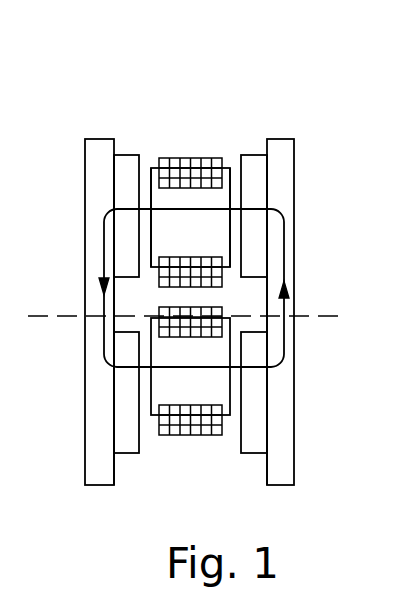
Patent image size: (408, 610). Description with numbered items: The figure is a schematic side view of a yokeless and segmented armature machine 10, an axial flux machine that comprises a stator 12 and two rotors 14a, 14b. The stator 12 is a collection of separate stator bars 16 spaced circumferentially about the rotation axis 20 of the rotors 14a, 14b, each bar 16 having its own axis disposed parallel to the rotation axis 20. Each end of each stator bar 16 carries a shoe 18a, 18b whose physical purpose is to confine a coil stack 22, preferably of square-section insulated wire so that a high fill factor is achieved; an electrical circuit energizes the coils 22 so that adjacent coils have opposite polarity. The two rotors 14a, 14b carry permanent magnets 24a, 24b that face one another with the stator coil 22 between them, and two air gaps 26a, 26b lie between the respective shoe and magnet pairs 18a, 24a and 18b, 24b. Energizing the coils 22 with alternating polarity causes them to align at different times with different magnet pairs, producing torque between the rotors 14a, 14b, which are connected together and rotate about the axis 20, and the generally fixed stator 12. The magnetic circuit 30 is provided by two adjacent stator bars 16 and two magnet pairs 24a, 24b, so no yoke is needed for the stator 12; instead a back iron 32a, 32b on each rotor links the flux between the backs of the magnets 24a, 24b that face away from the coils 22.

The yokeless and segmented armature machine 10 is at (226, 56).
The stator 12 is at (182, 452).
The rotor 14a is at (98, 486).
The rotor 14b is at (282, 486).
The stator bar 16 is at (193, 200).
The shoe 18a is at (148, 170).
The shoe 18b is at (229, 201).
The rotation axis 20 is at (50, 315).
The coil stack 22 is at (167, 157).
The permanent magnet 24a is at (126, 250).
The permanent magnet 24b is at (256, 258).
The air gap 26a is at (145, 170).
The air gap 26b is at (236, 188).
The magnetic circuit 30 is at (285, 332).
The back iron 32a is at (95, 449).
The back iron 32b is at (283, 442).